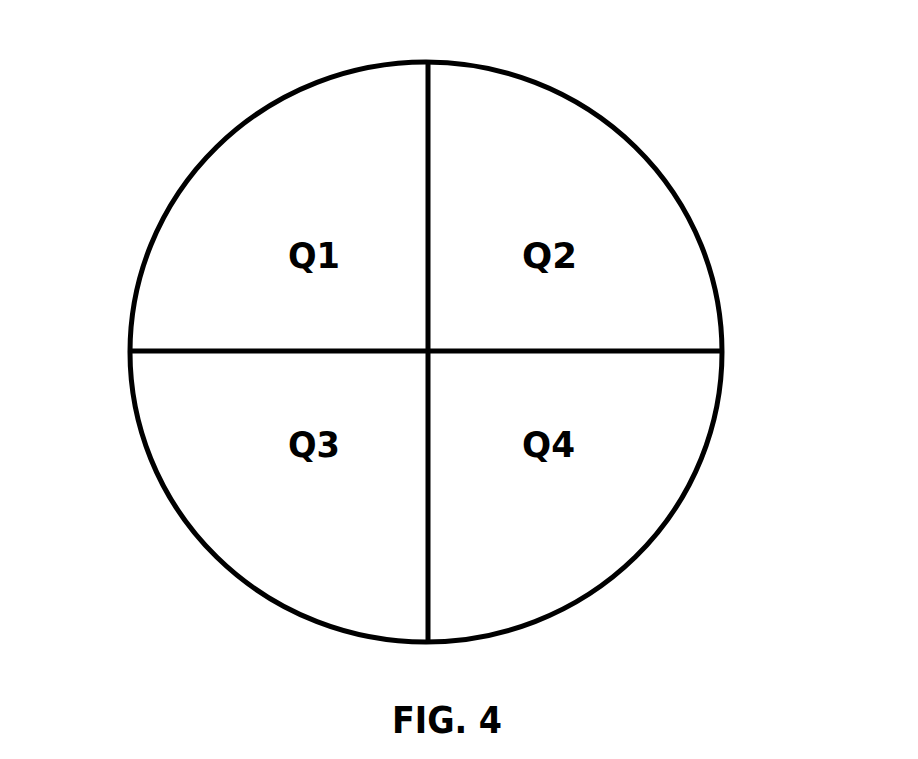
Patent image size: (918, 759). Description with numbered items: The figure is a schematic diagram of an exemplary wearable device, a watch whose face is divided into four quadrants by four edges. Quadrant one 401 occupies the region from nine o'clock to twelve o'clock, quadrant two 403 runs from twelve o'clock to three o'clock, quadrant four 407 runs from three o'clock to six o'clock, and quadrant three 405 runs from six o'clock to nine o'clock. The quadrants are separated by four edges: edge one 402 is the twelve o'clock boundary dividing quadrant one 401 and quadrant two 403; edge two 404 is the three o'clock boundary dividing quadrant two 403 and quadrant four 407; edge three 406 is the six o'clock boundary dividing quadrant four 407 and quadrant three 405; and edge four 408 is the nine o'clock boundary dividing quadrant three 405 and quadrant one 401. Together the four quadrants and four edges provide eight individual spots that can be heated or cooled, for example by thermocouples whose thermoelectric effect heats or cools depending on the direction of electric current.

The quadrant one 401 is at (305, 152).
The edge one 402 is at (430, 150).
The quadrant two 403 is at (560, 148).
The edge two 404 is at (660, 350).
The quadrant three 405 is at (237, 537).
The edge three 406 is at (425, 585).
The quadrant four 407 is at (575, 553).
The edge four 408 is at (162, 350).